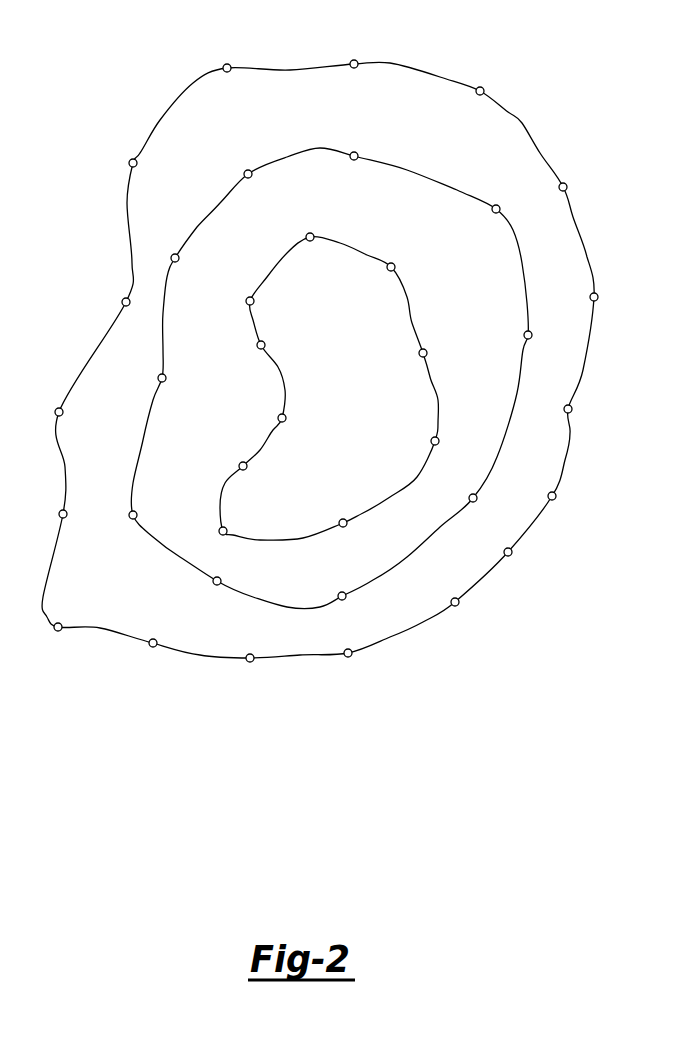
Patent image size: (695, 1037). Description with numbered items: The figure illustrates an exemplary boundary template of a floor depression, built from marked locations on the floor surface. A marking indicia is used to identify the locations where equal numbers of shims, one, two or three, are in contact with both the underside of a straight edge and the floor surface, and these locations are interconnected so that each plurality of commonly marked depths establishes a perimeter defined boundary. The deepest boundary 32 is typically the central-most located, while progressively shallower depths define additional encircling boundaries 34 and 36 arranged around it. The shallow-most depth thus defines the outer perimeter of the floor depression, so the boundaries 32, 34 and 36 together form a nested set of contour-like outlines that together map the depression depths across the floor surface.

The deepest boundary 32 is at (334, 370).
The encircling boundary 34 is at (472, 197).
The encircling boundary 36 is at (507, 112).